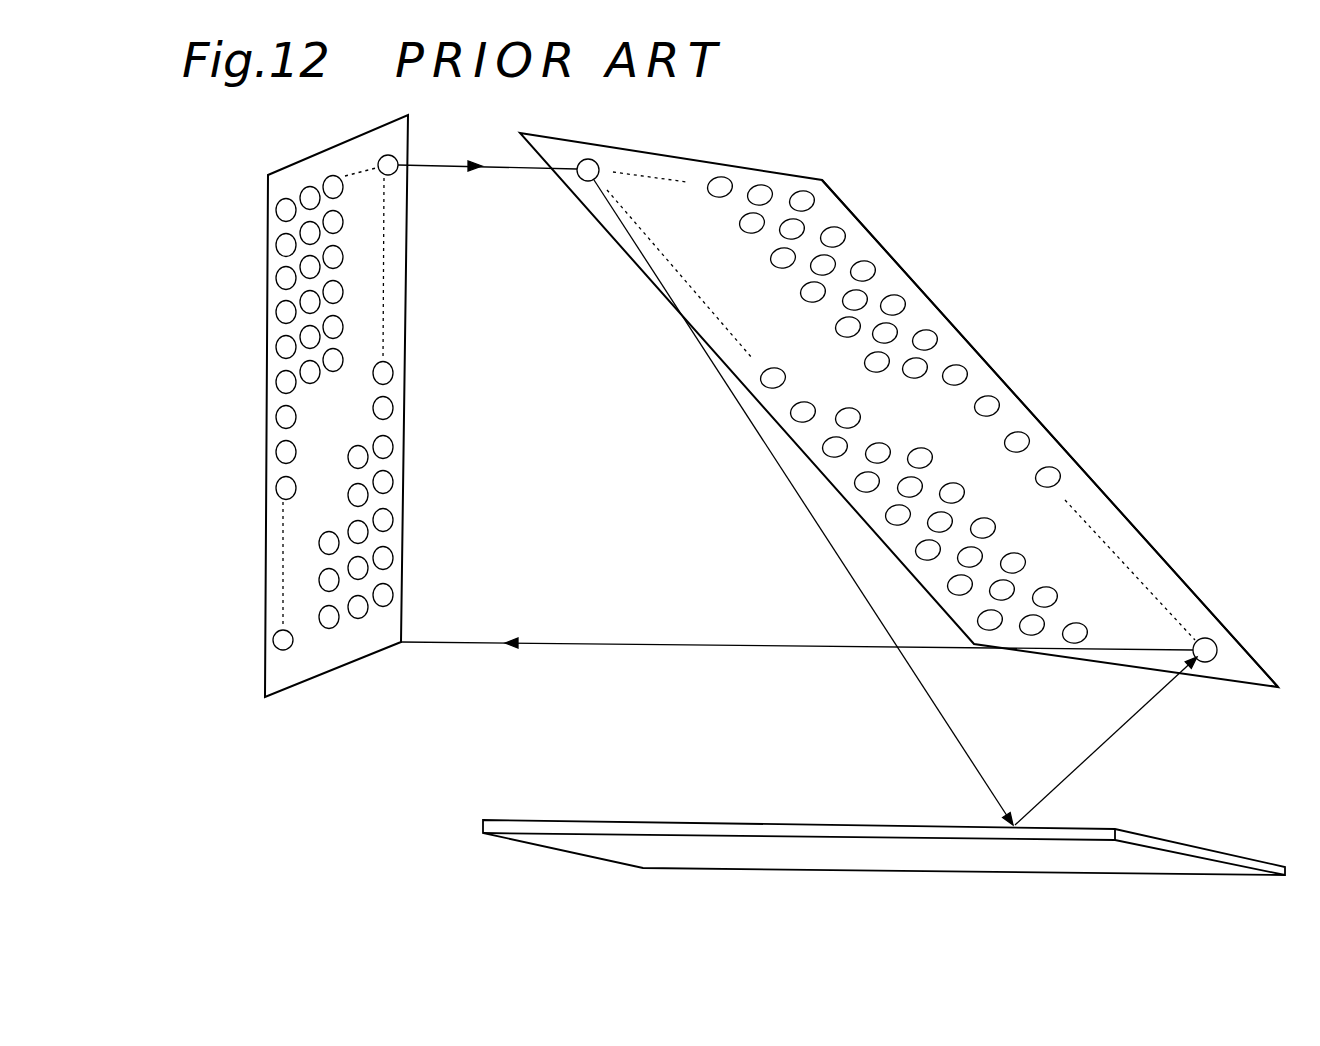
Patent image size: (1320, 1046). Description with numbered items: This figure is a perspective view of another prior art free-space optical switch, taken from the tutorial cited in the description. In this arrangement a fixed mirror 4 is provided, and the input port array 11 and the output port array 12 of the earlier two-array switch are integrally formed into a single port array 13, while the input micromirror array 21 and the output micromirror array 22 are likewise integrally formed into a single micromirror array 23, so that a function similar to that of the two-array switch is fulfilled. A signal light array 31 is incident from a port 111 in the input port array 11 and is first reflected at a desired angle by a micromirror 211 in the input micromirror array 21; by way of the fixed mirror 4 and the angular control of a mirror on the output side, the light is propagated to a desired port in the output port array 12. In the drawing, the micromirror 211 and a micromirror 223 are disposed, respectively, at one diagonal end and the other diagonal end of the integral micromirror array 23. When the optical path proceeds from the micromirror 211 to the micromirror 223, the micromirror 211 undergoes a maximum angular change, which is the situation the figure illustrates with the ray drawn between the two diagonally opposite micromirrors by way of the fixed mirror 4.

The input port array 11 is at (268, 207).
The port 111 is at (404, 159).
The output port array 12 is at (262, 640).
The port array 13 is at (256, 431).
The signal light array 31 is at (487, 181).
The input micromirror array 21 is at (862, 218).
The micromirror 211 is at (598, 158).
The output micromirror array 22 is at (1213, 612).
The micromirror 223 is at (1213, 662).
The micromirror array 23 is at (1025, 388).
The fixed mirror 4 is at (757, 853).